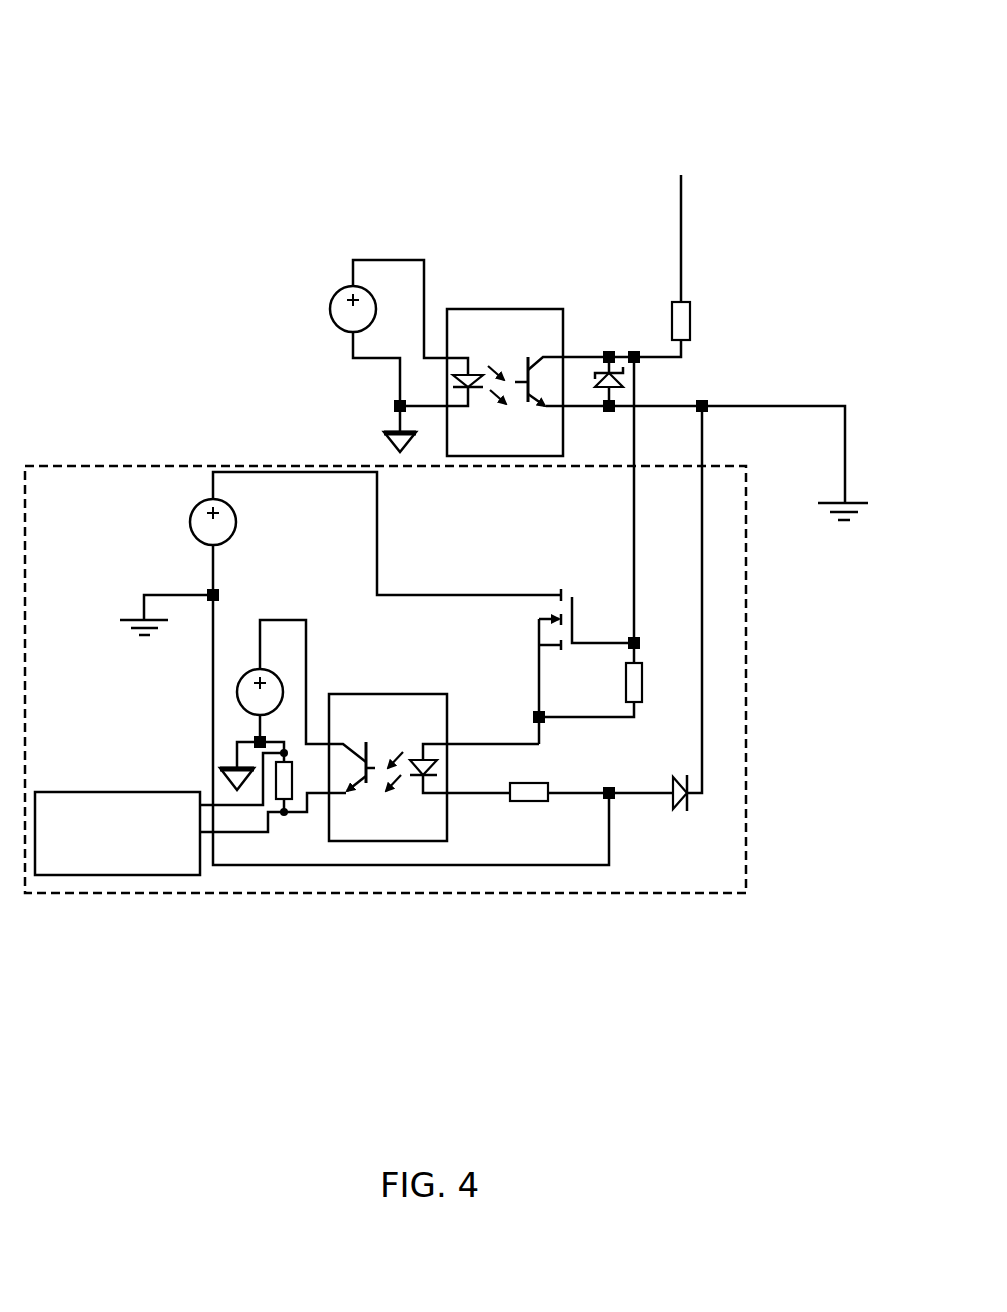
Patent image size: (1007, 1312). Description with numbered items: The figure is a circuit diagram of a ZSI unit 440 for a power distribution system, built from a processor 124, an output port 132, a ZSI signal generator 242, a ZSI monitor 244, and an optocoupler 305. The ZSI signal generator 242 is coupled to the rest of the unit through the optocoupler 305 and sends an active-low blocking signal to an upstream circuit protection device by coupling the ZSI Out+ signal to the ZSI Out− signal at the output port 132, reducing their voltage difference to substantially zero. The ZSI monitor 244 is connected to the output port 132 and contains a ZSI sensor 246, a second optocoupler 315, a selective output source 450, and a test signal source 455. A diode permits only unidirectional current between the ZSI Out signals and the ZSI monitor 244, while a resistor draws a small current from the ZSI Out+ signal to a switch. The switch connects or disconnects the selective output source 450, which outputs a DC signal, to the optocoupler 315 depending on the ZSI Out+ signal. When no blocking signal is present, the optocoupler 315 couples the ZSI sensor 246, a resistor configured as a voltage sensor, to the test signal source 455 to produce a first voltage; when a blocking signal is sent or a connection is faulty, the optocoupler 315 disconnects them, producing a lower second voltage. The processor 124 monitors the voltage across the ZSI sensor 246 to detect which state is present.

The ZSI unit 440 is at (216, 66).
The output port 132 is at (679, 196).
The ZSI signal generator 242 is at (329, 308).
The optocoupler 305 is at (503, 308).
The ZSI monitor 244 is at (747, 672).
The selective output source 450 is at (189, 519).
The test signal source 455 is at (236, 690).
The optocoupler 315 is at (388, 693).
The ZSI sensor 246 is at (295, 803).
The processor 124 is at (130, 861).